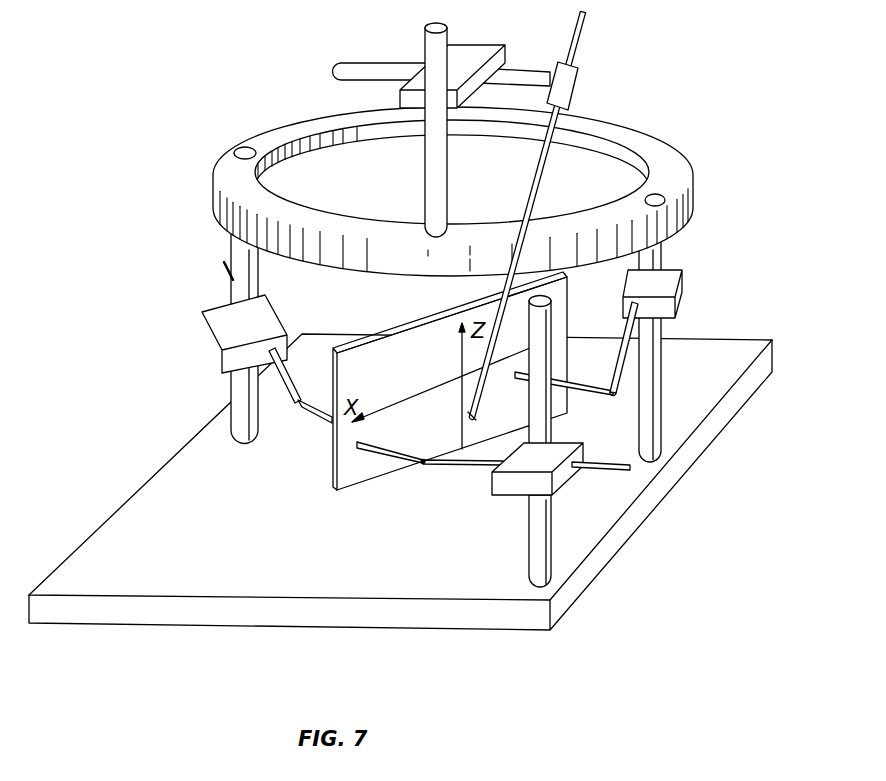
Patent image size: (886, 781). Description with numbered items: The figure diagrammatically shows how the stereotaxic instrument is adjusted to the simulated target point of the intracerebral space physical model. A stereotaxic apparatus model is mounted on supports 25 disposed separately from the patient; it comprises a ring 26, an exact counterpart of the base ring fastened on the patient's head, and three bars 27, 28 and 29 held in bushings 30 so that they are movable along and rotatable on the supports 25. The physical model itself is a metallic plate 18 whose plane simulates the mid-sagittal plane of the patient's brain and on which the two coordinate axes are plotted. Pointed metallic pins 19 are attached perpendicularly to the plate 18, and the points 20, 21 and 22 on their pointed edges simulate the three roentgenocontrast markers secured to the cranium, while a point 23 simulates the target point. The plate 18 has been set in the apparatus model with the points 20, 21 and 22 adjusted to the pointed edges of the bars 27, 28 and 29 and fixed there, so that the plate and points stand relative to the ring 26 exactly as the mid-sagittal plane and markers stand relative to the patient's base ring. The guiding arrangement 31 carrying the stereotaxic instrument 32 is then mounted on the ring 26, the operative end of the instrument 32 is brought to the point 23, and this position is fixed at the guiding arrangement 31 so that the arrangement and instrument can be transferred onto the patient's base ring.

The metallic plate 18 is at (399, 343).
The pointed metallic pins 19 is at (357, 447).
The point 20 is at (613, 391).
The point 21 is at (298, 406).
The point 22 is at (423, 464).
The point 23 is at (474, 420).
The supports 25 is at (233, 246).
The ring 26 is at (323, 124).
The bar 27 is at (628, 327).
The bar 28 is at (283, 376).
The bar 29 is at (613, 462).
The bushings 30 is at (212, 318).
The guiding arrangement 31 is at (472, 52).
The stereotaxic instrument 32 is at (587, 21).